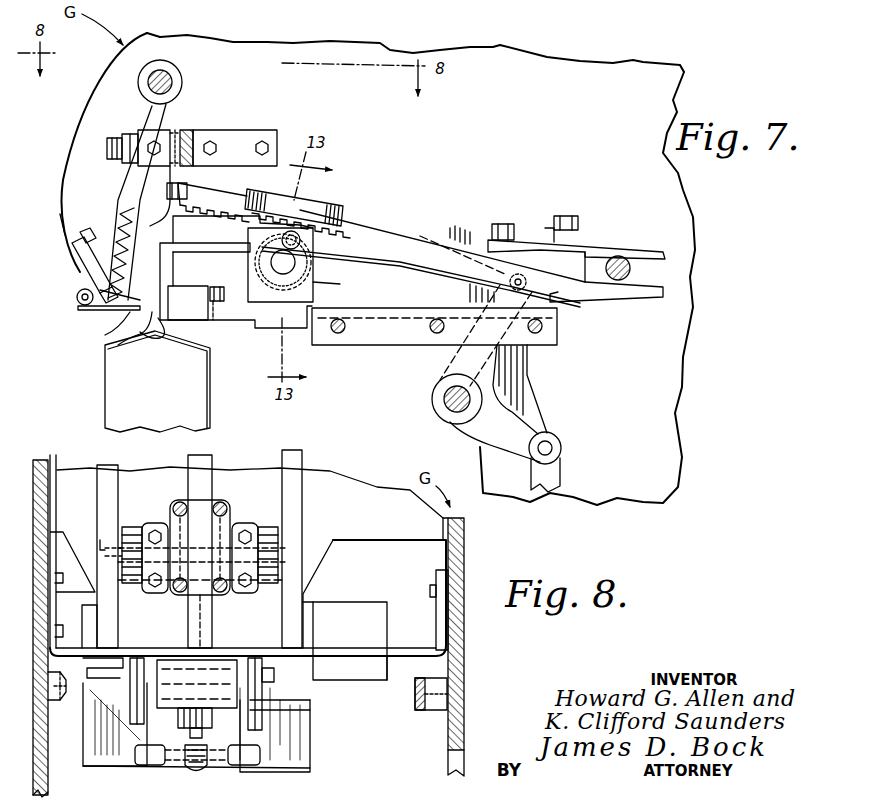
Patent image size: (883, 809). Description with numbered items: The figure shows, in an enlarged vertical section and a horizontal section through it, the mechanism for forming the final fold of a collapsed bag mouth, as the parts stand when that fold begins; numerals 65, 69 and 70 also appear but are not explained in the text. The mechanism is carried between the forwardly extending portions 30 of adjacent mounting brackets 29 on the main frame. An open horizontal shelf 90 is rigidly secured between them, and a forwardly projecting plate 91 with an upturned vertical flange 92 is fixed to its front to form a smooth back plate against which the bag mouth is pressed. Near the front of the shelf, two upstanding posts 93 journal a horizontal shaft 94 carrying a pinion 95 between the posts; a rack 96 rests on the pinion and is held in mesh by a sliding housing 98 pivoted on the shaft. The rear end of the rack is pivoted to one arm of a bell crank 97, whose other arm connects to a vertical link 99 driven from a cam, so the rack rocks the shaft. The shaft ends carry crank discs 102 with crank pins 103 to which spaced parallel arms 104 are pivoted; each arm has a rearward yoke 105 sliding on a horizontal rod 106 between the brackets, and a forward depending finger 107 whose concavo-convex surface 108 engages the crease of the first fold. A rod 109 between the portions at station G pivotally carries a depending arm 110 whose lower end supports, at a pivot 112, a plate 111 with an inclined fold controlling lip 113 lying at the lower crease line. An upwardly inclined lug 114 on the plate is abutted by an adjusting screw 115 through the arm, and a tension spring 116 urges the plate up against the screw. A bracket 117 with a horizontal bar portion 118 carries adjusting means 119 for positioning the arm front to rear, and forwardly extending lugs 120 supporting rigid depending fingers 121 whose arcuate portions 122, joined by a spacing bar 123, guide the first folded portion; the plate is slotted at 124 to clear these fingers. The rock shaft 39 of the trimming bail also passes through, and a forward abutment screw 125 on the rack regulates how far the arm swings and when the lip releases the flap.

In FIG. 7, the mounting brackets 29 is at (650, 58).
In FIG. 8, the mounting brackets 29 is at (466, 546).
In FIG. 7, the forwardly extending portions 30 is at (237, 46).
In FIG. 8, the forwardly extending portions 30 is at (46, 458).
In FIG. 7, the rock shaft 39 is at (431, 401).
In FIG. 7, the member 65 is at (452, 2).
In FIG. 7, the member 69 is at (396, 8).
In FIG. 7, the member 70 is at (424, 8).
In FIG. 7, the open horizontal shelf 90 is at (383, 342).
In FIG. 8, the open horizontal shelf 90 is at (332, 550).
In FIG. 7, the forwardly projecting plate 91 is at (222, 322).
In FIG. 7, the upturned vertical flange 92 is at (164, 306).
In FIG. 7, the upstanding posts 93 is at (316, 289).
In FIG. 8, the upstanding posts 93 is at (157, 596).
In FIG. 7, the horizontal shaft 94 is at (316, 269).
In FIG. 8, the horizontal shaft 94 is at (288, 582).
In FIG. 7, the pinion 95 is at (312, 289).
In FIG. 8, the pinion 95 is at (200, 597).
In FIG. 7, the rack 96 is at (354, 236).
In FIG. 8, the rack 96 is at (214, 464).
In FIG. 7, the bell crank 97 is at (513, 412).
In FIG. 7, the sliding housing 98 is at (306, 216).
In FIG. 8, the sliding housing 98 is at (206, 510).
In FIG. 7, the vertical link 99 is at (562, 463).
In FIG. 7, the crank discs 102 is at (344, 292).
In FIG. 8, the crank discs 102 is at (135, 527).
In FIG. 7, the crank pins 103 is at (246, 238).
In FIG. 8, the crank pins 103 is at (102, 537).
In FIG. 7, the spaced parallel arms 104 is at (433, 242).
In FIG. 8, the spaced parallel arms 104 is at (106, 466).
In FIG. 7, the yoke 105 is at (612, 238).
In FIG. 7, the horizontal rod 106 is at (631, 271).
In FIG. 7, the depending finger 107 is at (166, 258).
In FIG. 8, the depending finger 107 is at (316, 640).
In FIG. 7, the concavo-convex surface 108 is at (166, 273).
In FIG. 7, the rod 109 is at (182, 83).
In FIG. 8, the rod 109 is at (212, 660).
In FIG. 7, the depending arm 110 is at (128, 186).
In FIG. 8, the depending arm 110 is at (240, 746).
In FIG. 7, the plate 111 is at (128, 318).
In FIG. 8, the plate 111 is at (135, 722).
In FIG. 7, the pivotal connection 112 is at (76, 296).
In FIG. 8, the pivotal connection 112 is at (250, 760).
In FIG. 7, the fold controlling lip 113 is at (146, 326).
In FIG. 8, the fold controlling lip 113 is at (312, 698).
In FIG. 7, the upwardly inclined lug 114 is at (105, 303).
In FIG. 7, the adjusting screw 115 is at (78, 250).
In FIG. 8, the adjusting screw 115 is at (310, 772).
In FIG. 7, the tension spring 116 is at (60, 214).
In FIG. 7, the bracket 117 is at (250, 129).
In FIG. 8, the bracket 117 is at (434, 613).
In FIG. 7, the horizontal bar portion 118 is at (190, 130).
In FIG. 8, the horizontal bar portion 118 is at (364, 654).
In FIG. 7, the adjusting means 119 is at (120, 128).
In FIG. 8, the adjusting means 119 is at (180, 728).
In FIG. 7, the forwardly extending lugs 120 is at (127, 160).
In FIG. 8, the forwardly extending lugs 120 is at (140, 660).
In FIG. 7, the depending fingers 121 is at (142, 198).
In FIG. 8, the depending fingers 121 is at (170, 660).
In FIG. 7, the arcuate portions 122 is at (142, 334).
In FIG. 7, the spacing bar 123 is at (138, 334).
In FIG. 8, the slot 124 is at (90, 745).
In FIG. 7, the abutment screw 125 is at (188, 188).